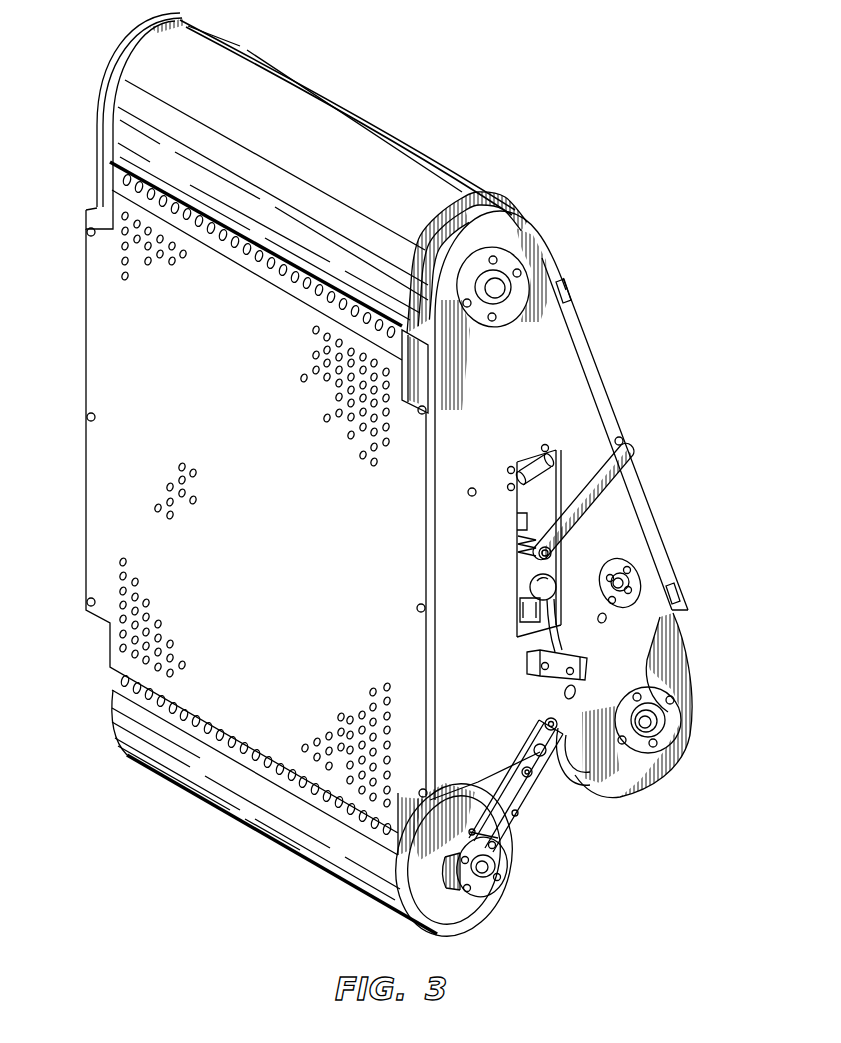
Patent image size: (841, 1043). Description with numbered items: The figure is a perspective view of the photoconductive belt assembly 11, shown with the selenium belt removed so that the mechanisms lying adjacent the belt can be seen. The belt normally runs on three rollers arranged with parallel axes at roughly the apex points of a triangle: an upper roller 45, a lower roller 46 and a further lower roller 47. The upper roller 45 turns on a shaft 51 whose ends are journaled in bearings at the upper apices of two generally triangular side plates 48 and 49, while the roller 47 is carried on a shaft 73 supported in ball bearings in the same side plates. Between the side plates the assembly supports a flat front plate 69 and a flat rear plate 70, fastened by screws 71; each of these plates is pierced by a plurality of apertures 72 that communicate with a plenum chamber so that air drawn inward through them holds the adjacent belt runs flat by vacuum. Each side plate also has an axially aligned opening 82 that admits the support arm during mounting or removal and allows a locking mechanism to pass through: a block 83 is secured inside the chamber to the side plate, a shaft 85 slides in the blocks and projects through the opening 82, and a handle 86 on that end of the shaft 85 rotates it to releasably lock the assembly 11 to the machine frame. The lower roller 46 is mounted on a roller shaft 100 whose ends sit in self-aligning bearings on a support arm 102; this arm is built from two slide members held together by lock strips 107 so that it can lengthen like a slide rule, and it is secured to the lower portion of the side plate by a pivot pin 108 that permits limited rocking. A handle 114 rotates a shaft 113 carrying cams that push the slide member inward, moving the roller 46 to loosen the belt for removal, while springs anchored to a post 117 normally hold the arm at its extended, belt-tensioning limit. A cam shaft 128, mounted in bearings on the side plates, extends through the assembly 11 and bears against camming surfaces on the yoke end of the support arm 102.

The photoconductive belt assembly 11 is at (678, 372).
The upper roller 45 is at (424, 147).
The lower roller 46 is at (360, 893).
The lower roller 47 is at (583, 783).
The side plate 48 is at (543, 259).
The side plate 49 is at (98, 136).
The shaft 51 is at (502, 288).
The front plate 69 is at (93, 355).
The rear plate 70 is at (590, 372).
The screws 71 is at (87, 232).
The apertures 72 is at (316, 330).
The shaft 73 is at (652, 721).
The opening 82 is at (560, 487).
The block 83 is at (517, 531).
The shaft 85 is at (551, 551).
The handle 86 is at (629, 463).
The roller shaft 100 is at (488, 874).
The support arm 102 is at (493, 783).
The lock strips 107 is at (530, 806).
The pivot pin 108 is at (578, 694).
The shaft 113 is at (556, 684).
The handle 114 is at (553, 576).
The post 117 is at (545, 728).
The cam shaft 128 is at (617, 597).